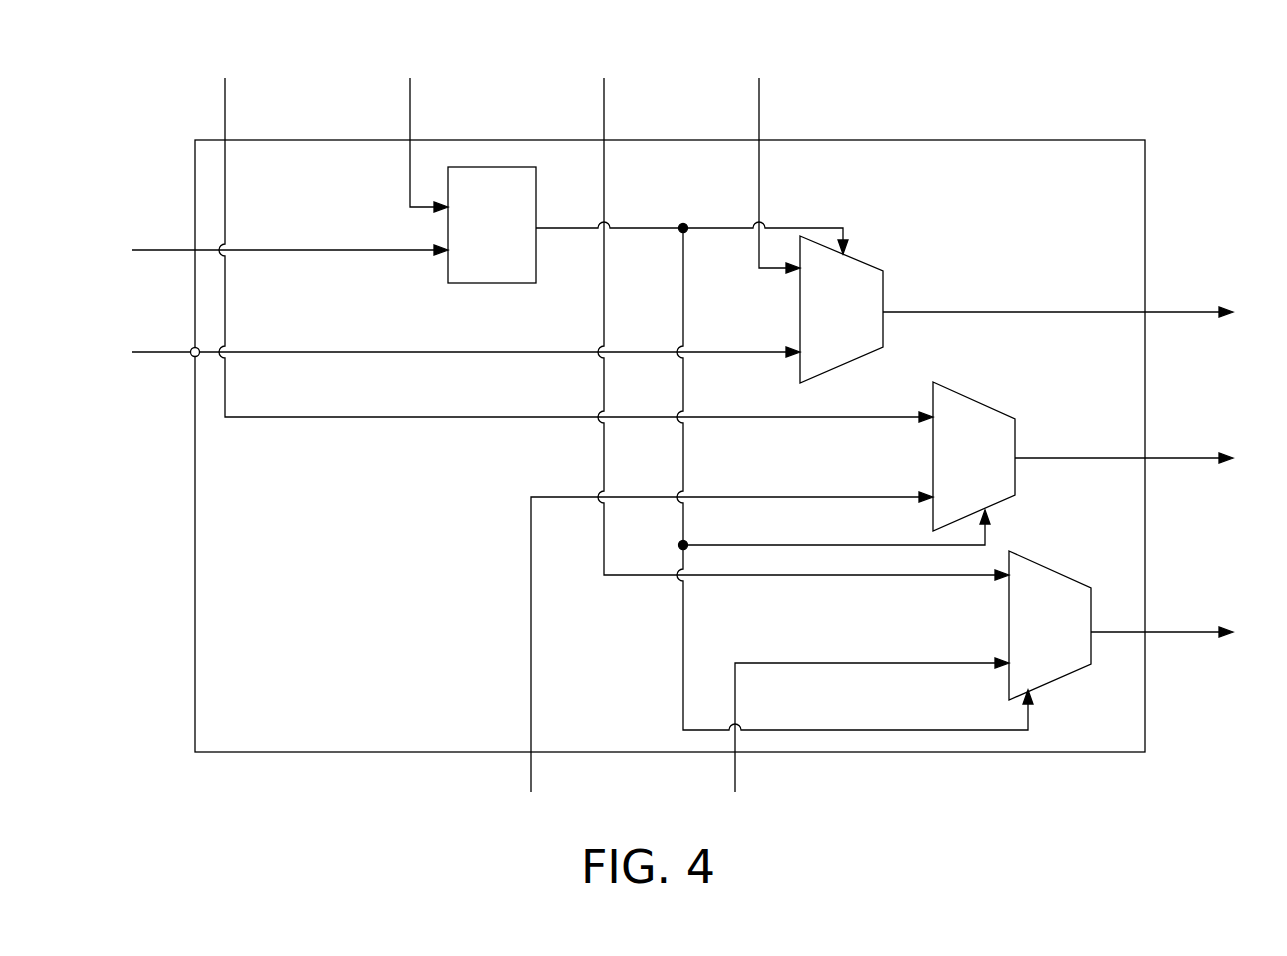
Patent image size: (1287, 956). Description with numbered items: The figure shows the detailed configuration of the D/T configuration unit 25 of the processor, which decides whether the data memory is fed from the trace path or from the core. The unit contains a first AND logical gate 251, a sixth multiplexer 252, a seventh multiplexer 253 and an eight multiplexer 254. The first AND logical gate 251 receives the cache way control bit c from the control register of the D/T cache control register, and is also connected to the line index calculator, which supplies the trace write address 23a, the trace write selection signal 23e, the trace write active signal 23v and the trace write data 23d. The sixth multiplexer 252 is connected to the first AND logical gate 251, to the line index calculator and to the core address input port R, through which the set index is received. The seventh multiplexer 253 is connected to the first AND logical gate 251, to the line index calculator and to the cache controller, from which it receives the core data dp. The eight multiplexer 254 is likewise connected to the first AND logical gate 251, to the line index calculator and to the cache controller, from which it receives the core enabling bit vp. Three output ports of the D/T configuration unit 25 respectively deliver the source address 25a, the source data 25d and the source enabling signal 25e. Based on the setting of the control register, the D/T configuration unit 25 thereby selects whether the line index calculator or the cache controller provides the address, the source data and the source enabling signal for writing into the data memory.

The D/T configuration unit 25 is at (918, 140).
The first AND logical gate 251 is at (486, 173).
The sixth multiplexer 252 is at (863, 268).
The seventh multiplexer 253 is at (970, 398).
The eight multiplexer 254 is at (1040, 570).
The trace write data 23d is at (572, 229).
The trace write active signal 23v is at (420, 124).
The trace write selection signal 23e is at (798, 308).
The trace write address 23a is at (770, 155).
The source address 25a is at (1084, 311).
The source data 25d is at (1151, 457).
The source enabling signal 25e is at (1189, 631).
The cache way control bit c is at (278, 249).
The core address input port R is at (190, 357).
The core data dp is at (725, 657).
The core enabling bit vp is at (865, 740).